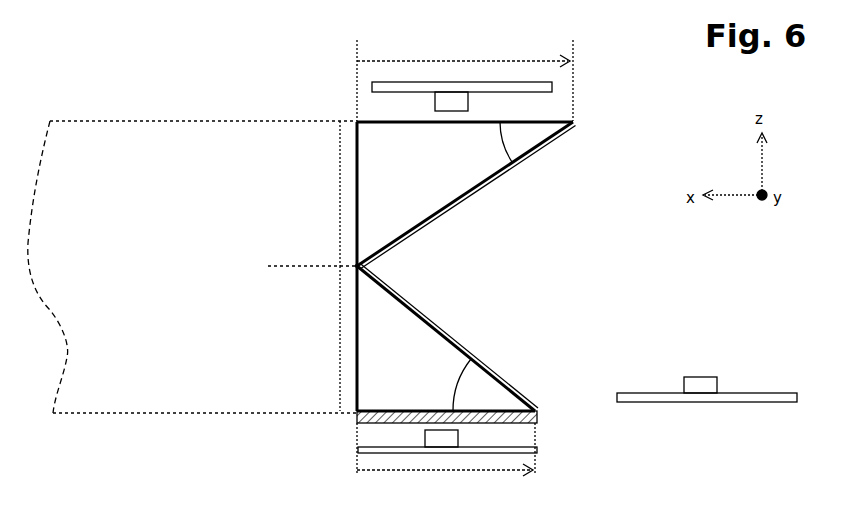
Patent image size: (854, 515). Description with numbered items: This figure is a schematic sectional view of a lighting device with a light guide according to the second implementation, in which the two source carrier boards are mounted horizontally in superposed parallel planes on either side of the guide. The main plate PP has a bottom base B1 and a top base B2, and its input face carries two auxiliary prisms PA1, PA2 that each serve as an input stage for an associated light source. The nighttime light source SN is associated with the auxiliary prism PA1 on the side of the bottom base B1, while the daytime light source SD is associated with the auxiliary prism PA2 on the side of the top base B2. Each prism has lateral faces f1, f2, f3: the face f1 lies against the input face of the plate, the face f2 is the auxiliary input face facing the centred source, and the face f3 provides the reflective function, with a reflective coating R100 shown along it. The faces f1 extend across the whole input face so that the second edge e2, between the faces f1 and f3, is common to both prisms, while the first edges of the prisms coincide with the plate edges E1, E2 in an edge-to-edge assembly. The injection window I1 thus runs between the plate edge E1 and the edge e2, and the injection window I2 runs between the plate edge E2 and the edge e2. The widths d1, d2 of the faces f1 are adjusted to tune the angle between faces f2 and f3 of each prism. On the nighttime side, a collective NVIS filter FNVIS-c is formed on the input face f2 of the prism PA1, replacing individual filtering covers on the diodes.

The main plate PP is at (80, 121).
The top base B2 is at (190, 110).
The bottom base B1 is at (195, 440).
The edge of the main plate E2 is at (357, 121).
The edge of the main plate E1 is at (357, 420).
The second edge e2 is at (357, 266).
The lateral face f1 is at (453, 195).
The auxiliary input face f2 is at (453, 190).
The lateral face f3 is at (465, 266).
The reflective coating R100 is at (543, 160).
The injection window I1 is at (321, 338).
The injection window I2 is at (312, 193).
The width of input face f1 of prism PA1 d1 is at (445, 480).
The width of input face f1 of prism PA2 d2 is at (463, 53).
The daytime light source SD is at (596, 91).
The nighttime light source SN is at (478, 465).
The collective NVIS filter FNVIS-c is at (535, 423).
The auxiliary prism PA1 is at (573, 305).
The auxiliary prism PA2 is at (568, 211).